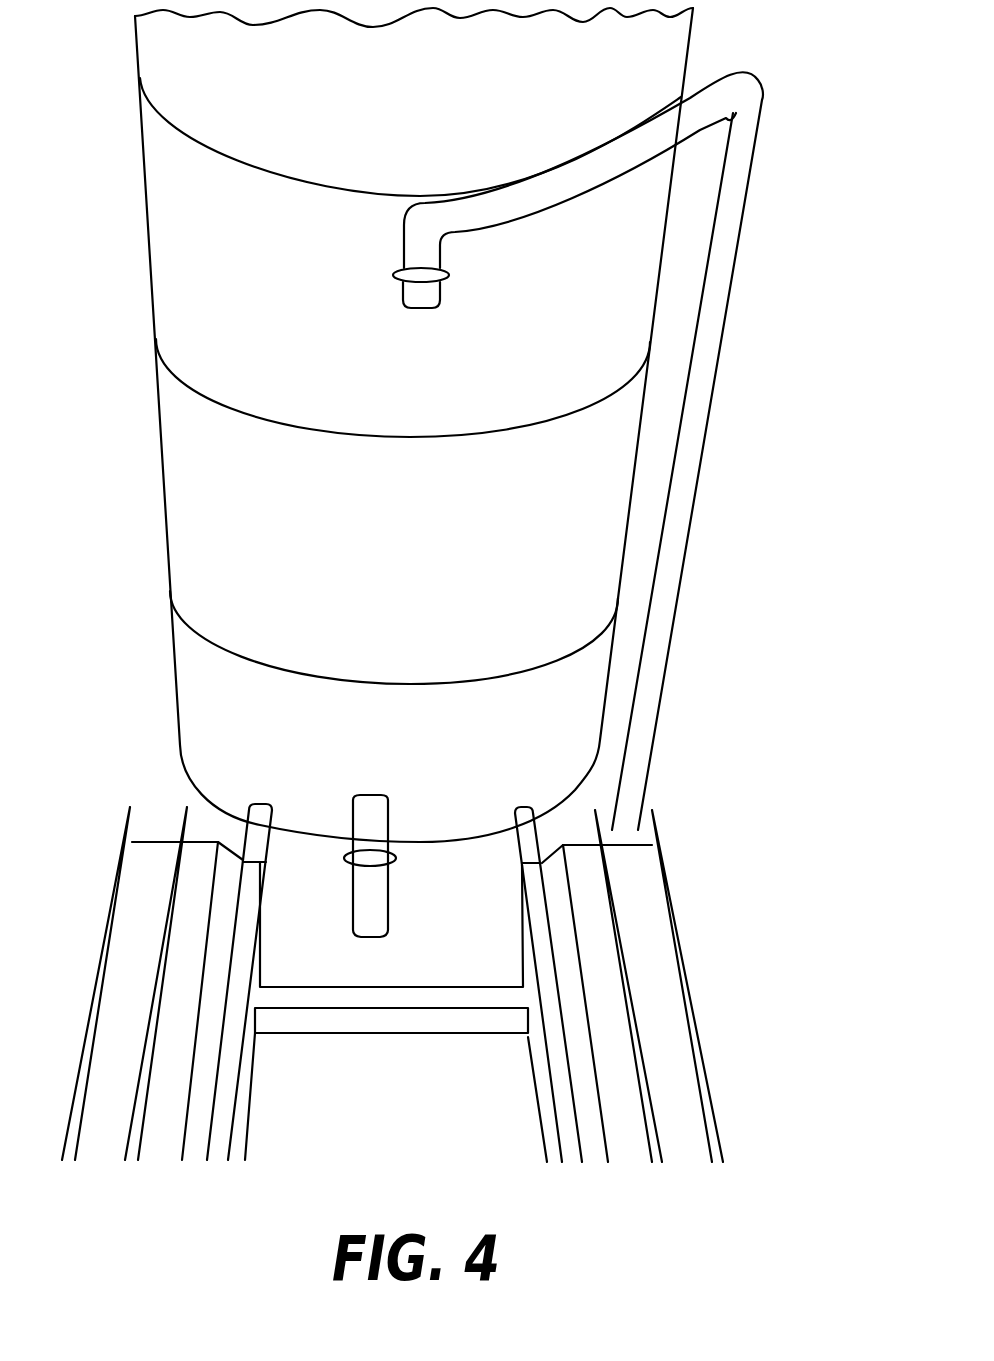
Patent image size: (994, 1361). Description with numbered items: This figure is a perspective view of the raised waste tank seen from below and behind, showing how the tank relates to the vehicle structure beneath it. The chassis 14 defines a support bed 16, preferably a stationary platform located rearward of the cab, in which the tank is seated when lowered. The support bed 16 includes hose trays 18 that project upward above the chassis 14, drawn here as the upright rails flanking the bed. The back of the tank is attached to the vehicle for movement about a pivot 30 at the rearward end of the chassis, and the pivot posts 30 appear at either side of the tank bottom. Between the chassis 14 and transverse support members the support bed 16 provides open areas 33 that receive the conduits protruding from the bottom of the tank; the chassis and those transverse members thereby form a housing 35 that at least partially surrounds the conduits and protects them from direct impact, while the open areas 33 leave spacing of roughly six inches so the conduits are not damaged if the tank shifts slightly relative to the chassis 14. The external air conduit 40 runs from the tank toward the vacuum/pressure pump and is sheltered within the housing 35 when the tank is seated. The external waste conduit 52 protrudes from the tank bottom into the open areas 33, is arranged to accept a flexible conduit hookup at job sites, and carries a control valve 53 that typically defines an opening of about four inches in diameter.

The chassis 14 is at (203, 842).
The support bed 16 is at (752, 993).
The hose trays 18 is at (117, 967).
The pivot 30 is at (268, 837).
The open areas 33 is at (505, 1097).
The housing 35 is at (240, 962).
The external air conduit 40 is at (522, 213).
The external waste conduit 52 is at (347, 887).
The control valve 53 is at (395, 865).